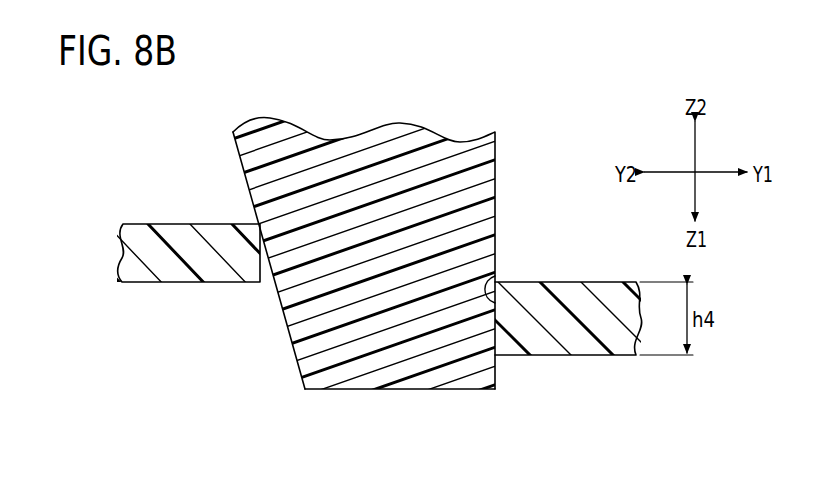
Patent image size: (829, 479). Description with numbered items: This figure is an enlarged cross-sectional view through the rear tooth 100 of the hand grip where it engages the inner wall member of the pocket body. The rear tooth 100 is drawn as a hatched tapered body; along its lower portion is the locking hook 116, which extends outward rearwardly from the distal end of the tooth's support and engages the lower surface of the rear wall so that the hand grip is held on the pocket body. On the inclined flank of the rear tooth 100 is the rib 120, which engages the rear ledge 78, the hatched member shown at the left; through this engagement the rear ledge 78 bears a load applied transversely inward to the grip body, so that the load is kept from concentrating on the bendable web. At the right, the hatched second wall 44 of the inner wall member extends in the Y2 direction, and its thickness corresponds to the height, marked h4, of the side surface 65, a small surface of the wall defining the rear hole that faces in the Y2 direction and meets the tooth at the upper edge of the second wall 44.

The rear tooth 100 is at (494, 132).
The rib 120 is at (297, 318).
The locking hook 116 is at (353, 373).
The side surface 65 is at (491, 276).
The rear ledge 78 is at (213, 272).
The second wall 44 is at (550, 345).